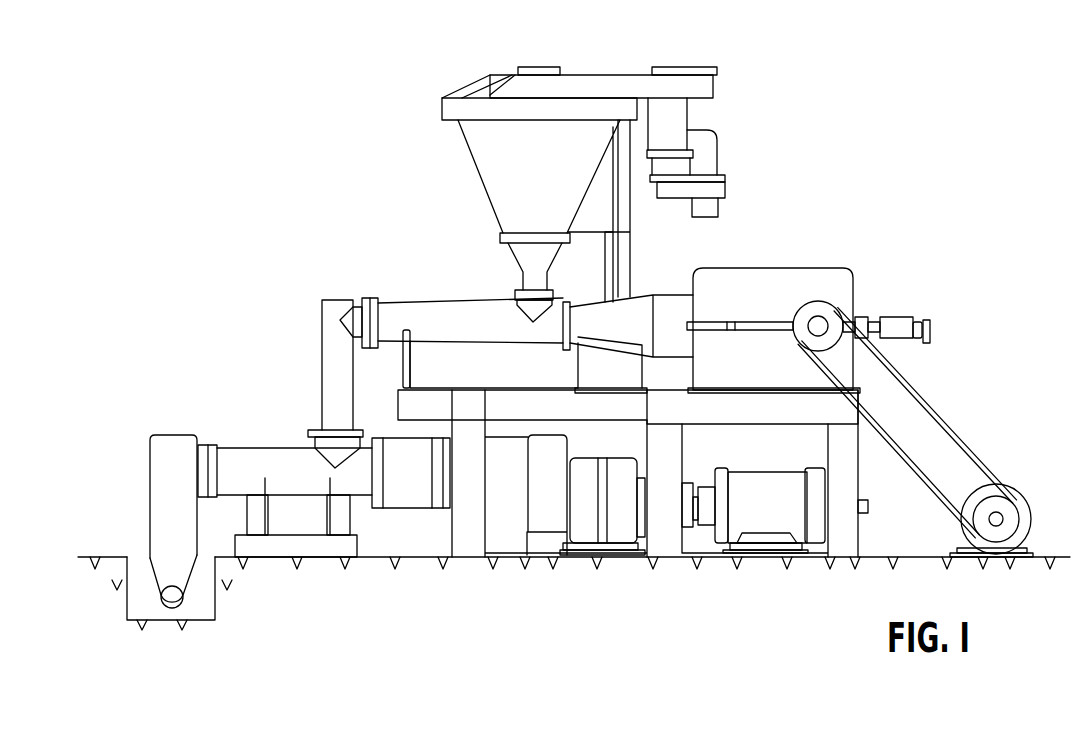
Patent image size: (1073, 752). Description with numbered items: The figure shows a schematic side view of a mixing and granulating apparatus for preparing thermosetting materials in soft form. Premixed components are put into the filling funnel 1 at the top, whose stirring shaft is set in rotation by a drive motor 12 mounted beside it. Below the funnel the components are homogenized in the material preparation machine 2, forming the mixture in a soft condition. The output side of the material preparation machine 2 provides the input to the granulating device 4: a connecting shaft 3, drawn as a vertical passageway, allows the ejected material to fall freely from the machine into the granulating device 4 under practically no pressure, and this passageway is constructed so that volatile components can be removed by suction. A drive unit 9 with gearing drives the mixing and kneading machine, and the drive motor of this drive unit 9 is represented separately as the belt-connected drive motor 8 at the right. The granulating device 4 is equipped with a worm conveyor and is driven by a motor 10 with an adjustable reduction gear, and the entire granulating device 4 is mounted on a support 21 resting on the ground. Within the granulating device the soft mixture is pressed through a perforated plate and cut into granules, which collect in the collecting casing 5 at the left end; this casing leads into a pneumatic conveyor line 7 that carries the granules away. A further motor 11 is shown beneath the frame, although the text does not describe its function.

The filling funnel 1 is at (505, 185).
The material preparation machine 2 is at (472, 320).
The connecting shaft 3 is at (342, 298).
The granulating device 4 is at (268, 460).
The collecting casing 5 is at (178, 452).
The pneumatic conveyor line 7 is at (172, 608).
The drive motor 8 is at (1007, 498).
The drive unit 9 is at (820, 288).
The motor 10 is at (758, 510).
The auxiliary motor 11 is at (613, 523).
The drive motor 12 is at (702, 150).
The support 21 is at (290, 547).